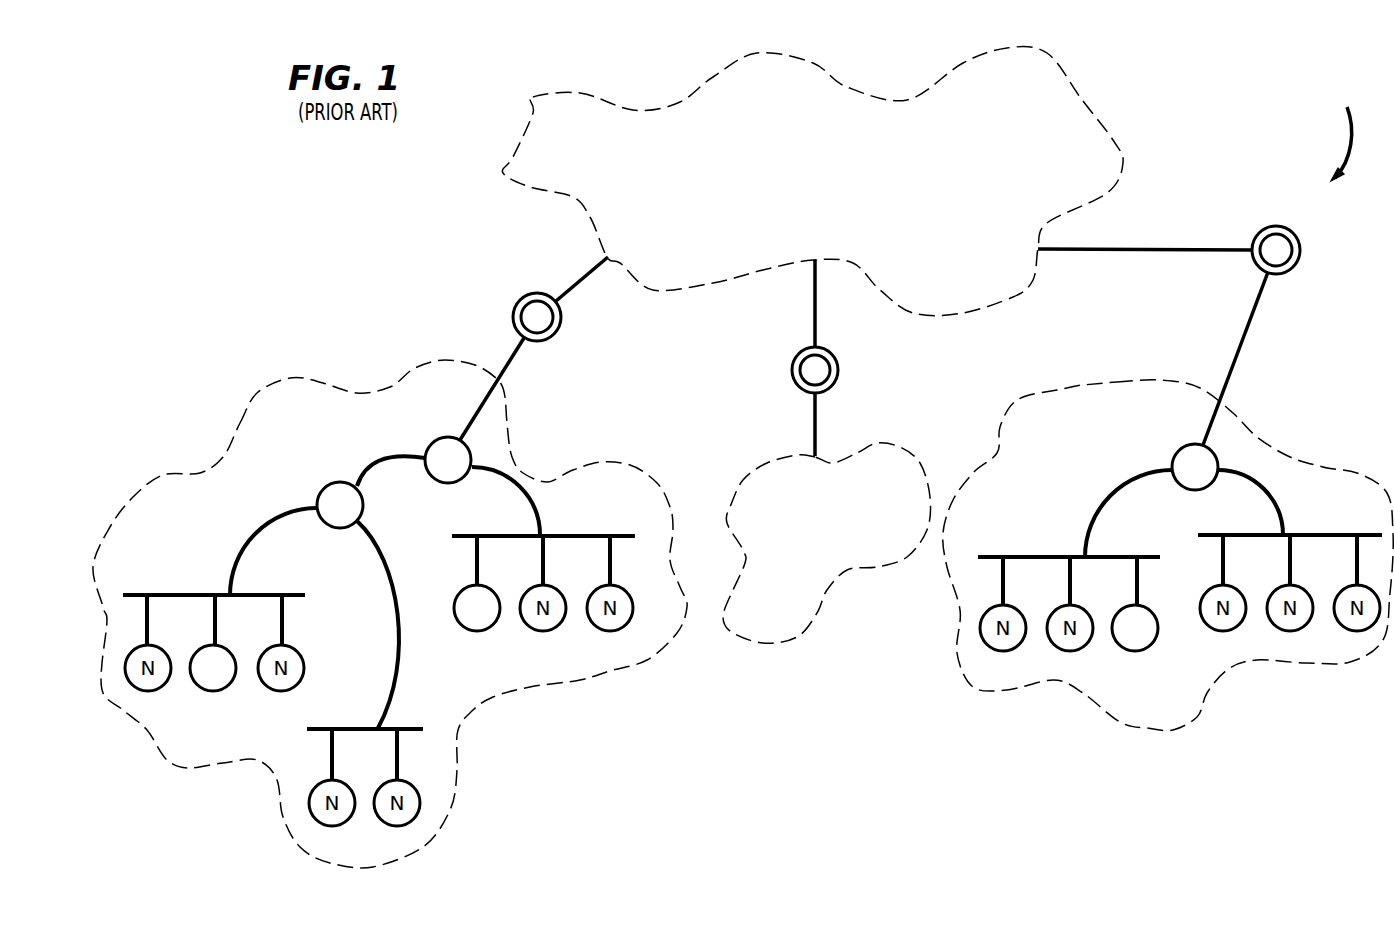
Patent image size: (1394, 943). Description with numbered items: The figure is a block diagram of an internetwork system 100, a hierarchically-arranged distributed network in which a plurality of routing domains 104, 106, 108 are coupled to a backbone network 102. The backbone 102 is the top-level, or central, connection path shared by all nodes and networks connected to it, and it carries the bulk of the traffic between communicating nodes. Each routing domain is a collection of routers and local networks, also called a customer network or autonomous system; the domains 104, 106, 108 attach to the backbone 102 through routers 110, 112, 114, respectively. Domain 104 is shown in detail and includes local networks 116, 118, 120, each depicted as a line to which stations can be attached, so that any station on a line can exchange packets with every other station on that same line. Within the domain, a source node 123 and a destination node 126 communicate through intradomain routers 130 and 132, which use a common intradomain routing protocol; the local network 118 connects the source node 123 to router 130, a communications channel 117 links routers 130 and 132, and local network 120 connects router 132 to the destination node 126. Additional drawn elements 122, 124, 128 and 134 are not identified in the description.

The internetwork system 100 is at (1344, 129).
The backbone network 102 is at (860, 183).
The routing domain 104 is at (367, 429).
The routing domain 106 is at (870, 542).
The routing domain 108 is at (1138, 459).
The router 110 is at (543, 292).
The router 112 is at (792, 367).
The router 114 is at (1280, 226).
The local network 116 is at (350, 728).
The communications channel 117 is at (397, 456).
The local network 118 is at (600, 535).
The local network 120 is at (172, 594).
The subnetwork bus 122 is at (1347, 534).
The source node 123 is at (480, 632).
The subnetwork bus 124 is at (1027, 556).
The destination node 126 is at (213, 692).
The node 128 is at (1135, 652).
The router 130 is at (452, 437).
The router 132 is at (338, 481).
The router 134 is at (1185, 444).